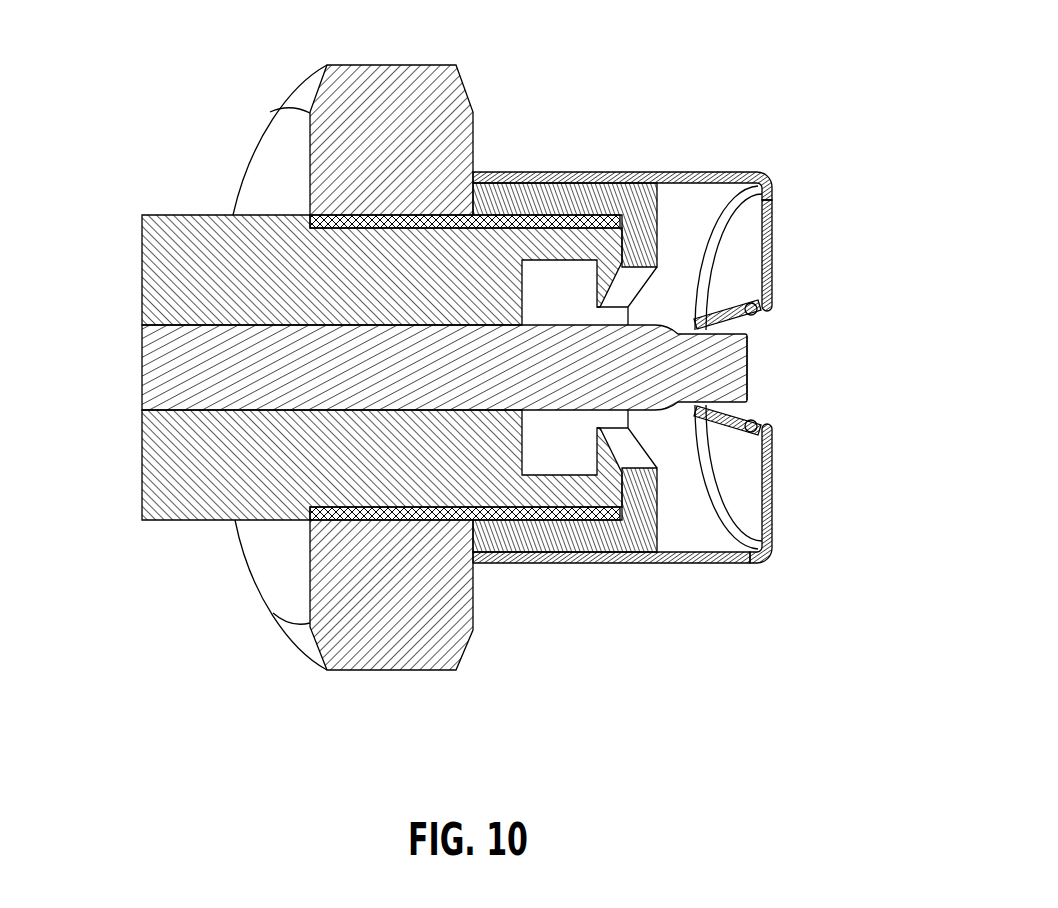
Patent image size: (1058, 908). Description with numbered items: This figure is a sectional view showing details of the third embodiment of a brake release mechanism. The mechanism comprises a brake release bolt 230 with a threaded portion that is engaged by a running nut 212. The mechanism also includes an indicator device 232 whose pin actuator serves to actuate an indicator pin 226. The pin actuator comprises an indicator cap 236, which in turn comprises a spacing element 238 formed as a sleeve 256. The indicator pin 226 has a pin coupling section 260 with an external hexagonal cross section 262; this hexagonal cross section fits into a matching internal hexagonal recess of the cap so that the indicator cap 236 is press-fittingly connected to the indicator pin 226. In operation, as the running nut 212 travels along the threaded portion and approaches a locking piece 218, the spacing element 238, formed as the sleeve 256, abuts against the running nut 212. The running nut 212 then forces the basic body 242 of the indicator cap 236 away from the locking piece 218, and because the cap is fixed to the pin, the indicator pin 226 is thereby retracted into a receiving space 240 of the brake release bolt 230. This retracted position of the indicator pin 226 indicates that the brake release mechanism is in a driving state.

The running nut 212 is at (338, 628).
The locking piece 218 is at (581, 552).
The indicator pin 226 is at (186, 366).
The brake release bolt 230 is at (167, 480).
The indicator device 232 is at (783, 222).
The indicator cap 236 is at (788, 538).
The spacing element 238 is at (677, 172).
The receiving space 240 is at (132, 305).
The basic body 242 is at (733, 465).
The sleeve 256 is at (700, 563).
The pin coupling section 260 is at (770, 367).
The external hexagonal cross section 262 is at (778, 311).